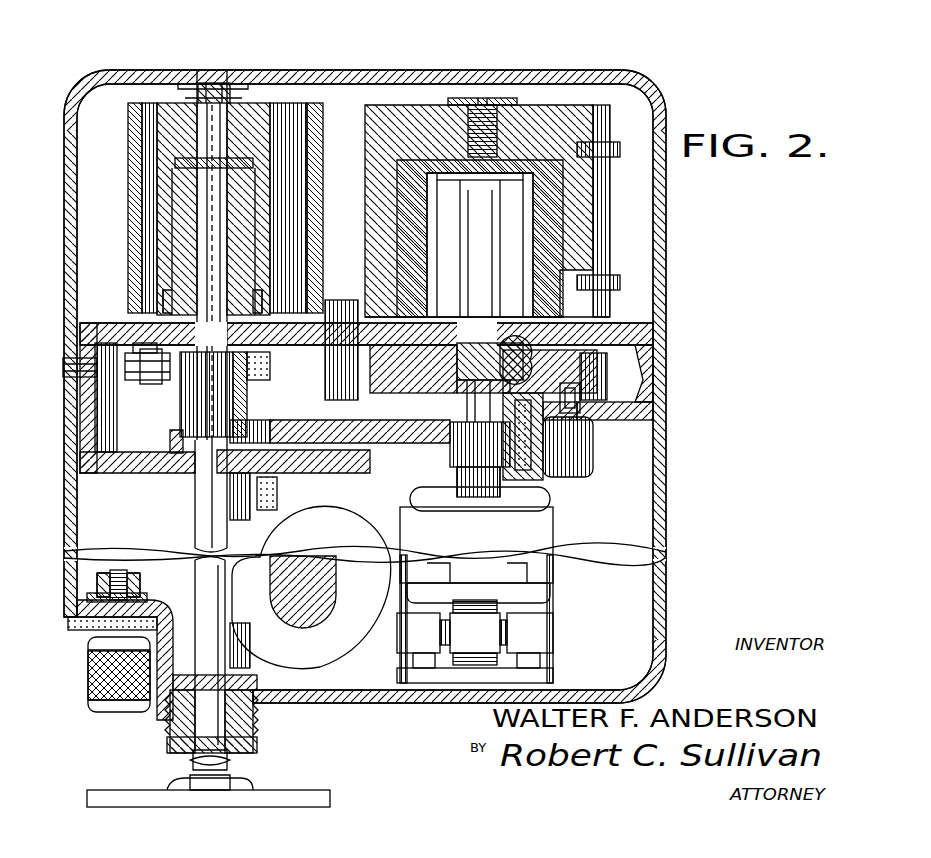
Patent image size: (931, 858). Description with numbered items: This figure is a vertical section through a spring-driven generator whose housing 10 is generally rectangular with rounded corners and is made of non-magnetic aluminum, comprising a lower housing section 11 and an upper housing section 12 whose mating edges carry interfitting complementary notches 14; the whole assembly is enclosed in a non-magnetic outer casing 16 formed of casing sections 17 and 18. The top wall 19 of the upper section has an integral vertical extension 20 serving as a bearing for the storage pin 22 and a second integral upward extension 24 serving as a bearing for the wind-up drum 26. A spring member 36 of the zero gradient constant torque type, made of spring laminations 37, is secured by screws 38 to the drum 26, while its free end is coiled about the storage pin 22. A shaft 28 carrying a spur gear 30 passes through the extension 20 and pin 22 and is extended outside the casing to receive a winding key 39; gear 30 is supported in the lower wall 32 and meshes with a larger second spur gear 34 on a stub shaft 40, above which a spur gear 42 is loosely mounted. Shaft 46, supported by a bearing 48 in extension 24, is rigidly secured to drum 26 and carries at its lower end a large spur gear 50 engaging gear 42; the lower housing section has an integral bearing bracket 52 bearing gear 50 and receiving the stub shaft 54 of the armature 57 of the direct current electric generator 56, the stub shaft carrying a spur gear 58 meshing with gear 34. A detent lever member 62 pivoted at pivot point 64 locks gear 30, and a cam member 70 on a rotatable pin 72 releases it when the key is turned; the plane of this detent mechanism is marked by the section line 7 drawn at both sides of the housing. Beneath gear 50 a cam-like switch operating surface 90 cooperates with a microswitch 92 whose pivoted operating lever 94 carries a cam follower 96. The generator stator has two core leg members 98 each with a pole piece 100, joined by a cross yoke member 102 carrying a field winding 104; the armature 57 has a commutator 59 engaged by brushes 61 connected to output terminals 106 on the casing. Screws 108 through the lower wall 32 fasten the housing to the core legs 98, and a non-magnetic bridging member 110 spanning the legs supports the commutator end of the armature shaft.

The section line 7- 7 is at (60, 349).
The housing 10 is at (92, 316).
The lower housing section 11 is at (123, 473).
The upper housing section 12 is at (115, 323).
The interfitting complementary notches 14 is at (85, 374).
The non-magnetic outer casing 16 is at (64, 197).
The casing section 17 is at (64, 516).
The casing section 18 is at (168, 70).
The top wall 19 is at (600, 335).
The integral vertical extension 20 is at (177, 254).
The storage pin 22 is at (160, 208).
The second integral upward extension 24 is at (410, 233).
The wind-up drum 26 is at (365, 191).
The shaft 28 is at (219, 123).
The spur gear 30 is at (185, 398).
The lower wall 32 is at (168, 462).
The second spur gear 34 is at (250, 428).
The spring member 36 is at (126, 141).
The spring laminations 37 is at (319, 141).
The screws 38 is at (615, 142).
The winding key 39 is at (193, 774).
The stub shaft 40 is at (328, 430).
The spur gear 42 is at (323, 387).
The shaft 46 is at (466, 260).
The bearing 48 is at (505, 180).
The large spur gear 50 is at (403, 380).
The bearing bracket 52 is at (500, 407).
The stub shaft 54 is at (476, 410).
The direct current electric generator 56 is at (382, 662).
The armature 57 is at (550, 539).
The spur gear 58 is at (455, 460).
The commutator 59 is at (475, 632).
The brushes 61 is at (440, 633).
The lever member 62 is at (177, 374).
The pivot point 64 is at (271, 364).
The cam member 70 is at (156, 365).
The rotatable pin 72 is at (75, 363).
The cam-like switch operating surface 90 is at (545, 393).
The microswitch 92 is at (560, 465).
The pivoted operating lever 94 is at (575, 411).
The cam follower 96 is at (590, 369).
The core leg members 98 is at (234, 511).
The pole piece 100 is at (553, 661).
The cross yoke member 102 is at (292, 590).
The field winding 104 is at (284, 508).
The output terminals 106 is at (88, 652).
The screws 108 is at (595, 460).
The non-magnetic bridging member 110 is at (545, 676).